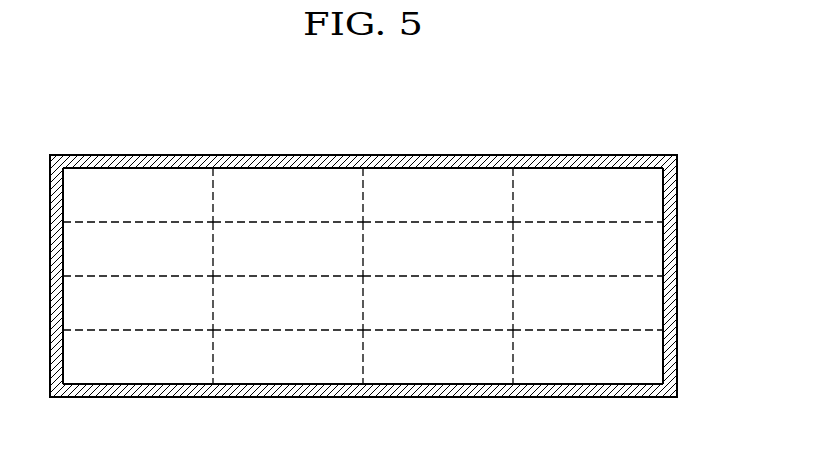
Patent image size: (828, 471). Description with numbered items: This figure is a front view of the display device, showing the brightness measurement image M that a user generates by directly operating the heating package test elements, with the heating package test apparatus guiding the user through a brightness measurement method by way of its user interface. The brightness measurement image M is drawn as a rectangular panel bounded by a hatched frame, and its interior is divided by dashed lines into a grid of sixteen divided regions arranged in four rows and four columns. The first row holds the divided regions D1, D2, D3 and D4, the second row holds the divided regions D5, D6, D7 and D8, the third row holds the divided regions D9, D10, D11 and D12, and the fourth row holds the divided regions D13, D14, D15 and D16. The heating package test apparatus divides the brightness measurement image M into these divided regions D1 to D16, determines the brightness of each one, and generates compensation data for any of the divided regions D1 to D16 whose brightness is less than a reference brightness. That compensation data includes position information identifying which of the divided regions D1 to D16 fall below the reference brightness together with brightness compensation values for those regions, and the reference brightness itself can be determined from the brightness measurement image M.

The brightness measurement image M is at (414, 227).
The divided region D1 is at (138, 195).
The divided region D2 is at (288, 195).
The divided region D3 is at (438, 195).
The divided region D4 is at (588, 195).
The divided region D5 is at (138, 249).
The divided region D6 is at (288, 249).
The divided region D7 is at (438, 249).
The divided region D8 is at (588, 249).
The divided region D9 is at (138, 303).
The divided region D10 is at (288, 303).
The divided region D11 is at (438, 303).
The divided region D12 is at (588, 303).
The divided region D13 is at (138, 357).
The divided region D14 is at (288, 357).
The divided region D15 is at (438, 357).
The divided region D16 is at (588, 357).